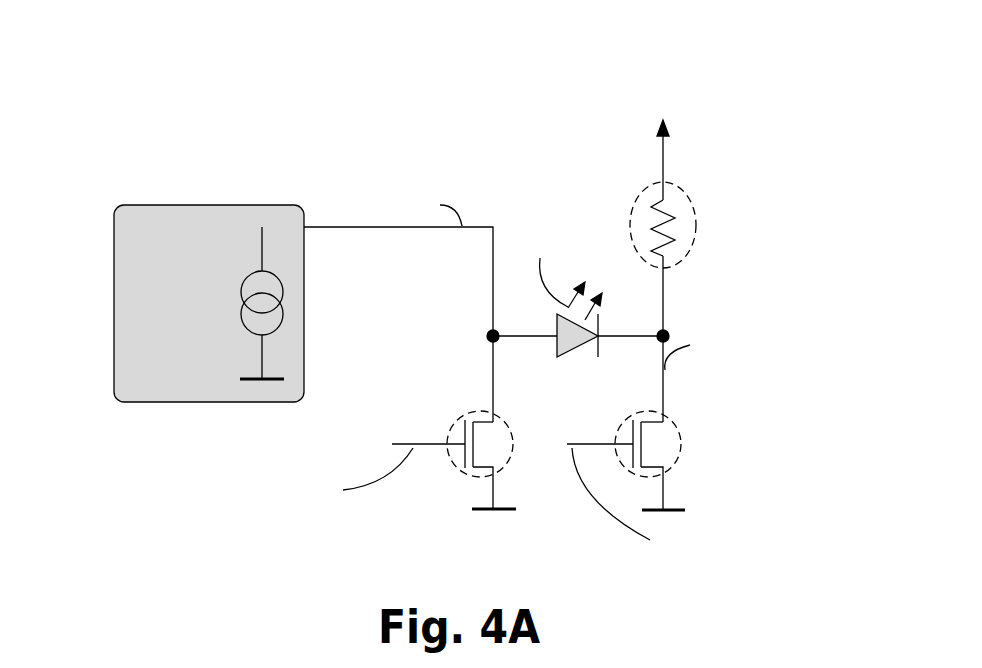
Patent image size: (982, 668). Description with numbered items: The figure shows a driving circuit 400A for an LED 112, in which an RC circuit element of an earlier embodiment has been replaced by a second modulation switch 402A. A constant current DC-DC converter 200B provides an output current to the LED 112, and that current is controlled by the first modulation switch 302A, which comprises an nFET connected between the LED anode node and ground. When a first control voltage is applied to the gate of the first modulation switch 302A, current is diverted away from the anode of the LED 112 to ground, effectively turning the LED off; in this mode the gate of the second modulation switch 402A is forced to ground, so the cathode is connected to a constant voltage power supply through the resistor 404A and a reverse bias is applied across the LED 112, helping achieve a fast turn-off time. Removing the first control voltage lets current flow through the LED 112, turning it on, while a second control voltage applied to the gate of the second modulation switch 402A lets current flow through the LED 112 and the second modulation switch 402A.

The driving circuit 400A is at (145, 63).
The constant current DC-DC converter 200B is at (140, 204).
The LED 112 is at (560, 363).
The first modulation switch 302A is at (462, 417).
The second modulation switch 402A is at (672, 417).
The resistor 404A is at (682, 182).